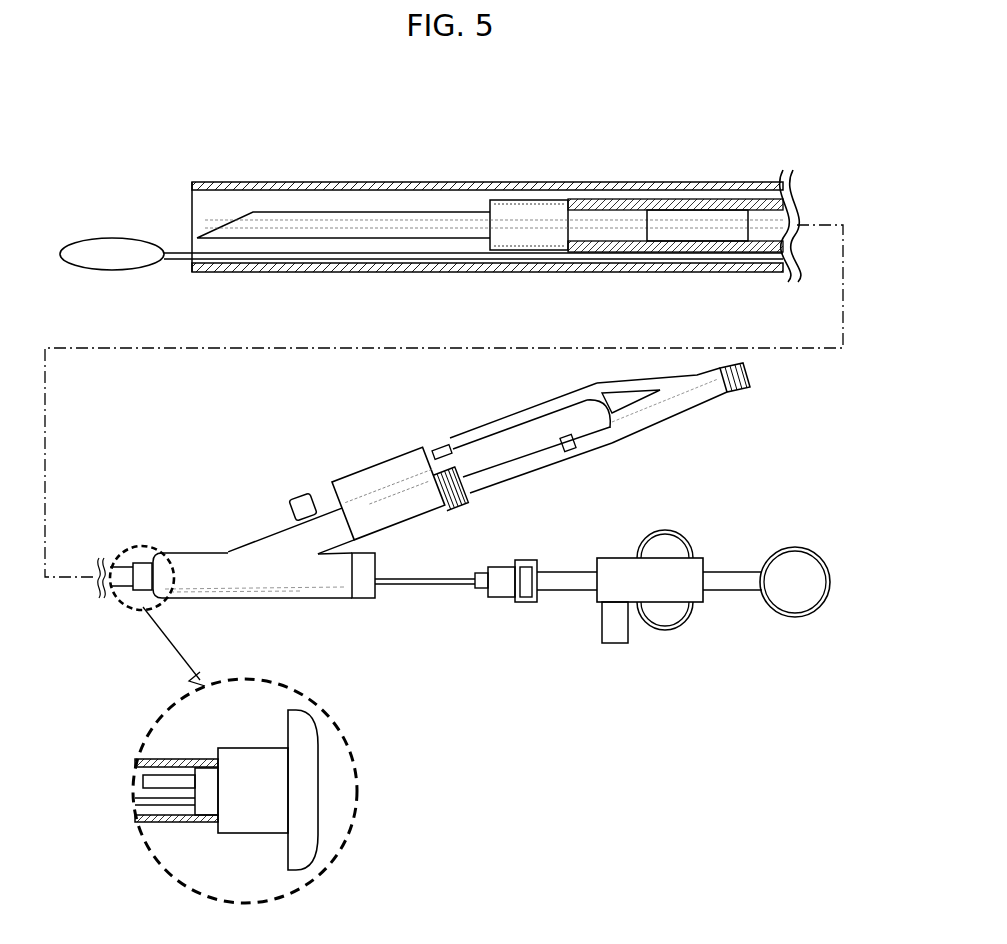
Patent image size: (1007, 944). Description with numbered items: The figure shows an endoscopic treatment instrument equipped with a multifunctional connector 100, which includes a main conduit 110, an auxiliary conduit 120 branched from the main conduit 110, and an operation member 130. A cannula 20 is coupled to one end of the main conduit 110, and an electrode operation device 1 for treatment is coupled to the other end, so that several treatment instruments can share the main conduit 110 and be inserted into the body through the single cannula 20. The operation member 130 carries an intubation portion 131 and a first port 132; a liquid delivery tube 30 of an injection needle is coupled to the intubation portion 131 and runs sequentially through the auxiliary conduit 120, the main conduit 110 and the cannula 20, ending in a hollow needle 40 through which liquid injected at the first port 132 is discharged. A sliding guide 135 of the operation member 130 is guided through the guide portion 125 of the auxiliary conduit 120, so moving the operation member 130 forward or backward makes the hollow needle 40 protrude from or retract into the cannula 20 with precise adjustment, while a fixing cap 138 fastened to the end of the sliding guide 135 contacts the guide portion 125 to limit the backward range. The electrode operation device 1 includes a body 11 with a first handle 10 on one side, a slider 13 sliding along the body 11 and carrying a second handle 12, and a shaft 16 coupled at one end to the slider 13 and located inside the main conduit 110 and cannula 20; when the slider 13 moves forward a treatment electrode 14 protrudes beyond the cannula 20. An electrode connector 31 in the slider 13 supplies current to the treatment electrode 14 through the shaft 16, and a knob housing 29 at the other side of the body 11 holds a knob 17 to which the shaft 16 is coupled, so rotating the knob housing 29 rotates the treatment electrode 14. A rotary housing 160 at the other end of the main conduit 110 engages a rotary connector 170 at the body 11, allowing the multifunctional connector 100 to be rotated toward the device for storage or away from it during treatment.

The electrode operation device for treatment 1 is at (641, 605).
The first handle 10 is at (795, 617).
The body 11 is at (566, 590).
The second handle 12 is at (663, 651).
The slider 13 is at (697, 568).
The treatment electrode 14 is at (112, 238).
The shaft 16 is at (392, 256).
The knob 17 is at (520, 562).
The cannula 20 is at (443, 183).
The knob housing 29 is at (527, 602).
The liquid delivery tube 30 is at (675, 210).
The electrode connector 31 is at (615, 643).
The hollow needle 40 is at (297, 212).
The multifunctional connector 100 is at (477, 524).
The main conduit 110 is at (262, 582).
The auxiliary conduit 120 is at (393, 540).
The guide portion 125 is at (387, 467).
The operation member 130 is at (663, 413).
The intubation portion 131 is at (582, 443).
The first port 132 is at (778, 380).
The sliding guide 135 is at (493, 428).
The fixing cap 138 is at (300, 500).
The rotary housing 160 is at (368, 590).
The rotary connector 170 is at (500, 607).